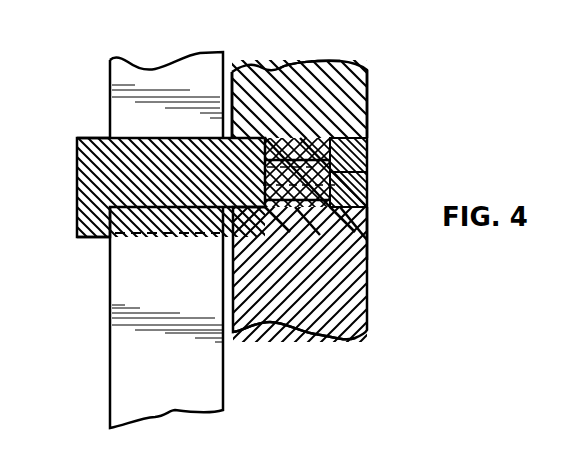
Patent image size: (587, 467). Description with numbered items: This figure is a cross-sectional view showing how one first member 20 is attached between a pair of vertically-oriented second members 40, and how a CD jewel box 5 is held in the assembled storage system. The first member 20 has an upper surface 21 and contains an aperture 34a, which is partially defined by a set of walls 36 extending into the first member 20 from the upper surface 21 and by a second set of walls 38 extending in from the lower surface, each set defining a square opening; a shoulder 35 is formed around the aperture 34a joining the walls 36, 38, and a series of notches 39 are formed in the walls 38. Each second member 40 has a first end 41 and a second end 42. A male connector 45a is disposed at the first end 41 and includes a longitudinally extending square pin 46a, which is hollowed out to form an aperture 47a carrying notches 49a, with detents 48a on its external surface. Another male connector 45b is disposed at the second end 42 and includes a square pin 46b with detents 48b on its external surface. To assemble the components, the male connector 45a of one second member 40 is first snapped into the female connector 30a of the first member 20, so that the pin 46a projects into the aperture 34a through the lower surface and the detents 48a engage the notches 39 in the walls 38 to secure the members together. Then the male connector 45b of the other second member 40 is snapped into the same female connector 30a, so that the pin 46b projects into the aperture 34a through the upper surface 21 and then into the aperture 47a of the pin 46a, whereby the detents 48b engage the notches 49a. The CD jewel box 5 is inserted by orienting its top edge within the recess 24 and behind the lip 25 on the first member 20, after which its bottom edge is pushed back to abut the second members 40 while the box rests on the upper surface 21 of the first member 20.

The CD jewel box 5 is at (135, 77).
The first member 20 is at (77, 181).
The upper surface 21 is at (88, 140).
The recess 24 is at (148, 210).
The lip 25 is at (92, 238).
The female connector 30a is at (281, 134).
The aperture 34a is at (370, 128).
The shoulder 35 is at (262, 162).
The walls 36 is at (300, 150).
The walls 38 is at (372, 195).
The notches 39 is at (370, 173).
The second member 40 is at (369, 75).
The first end 41 is at (320, 326).
The second end 42 is at (327, 75).
The male connector 45a is at (372, 224).
The male connector 45b is at (370, 112).
The pin 46a is at (275, 215).
The pin 46b is at (370, 250).
The aperture 47a is at (298, 240).
The detents 48a is at (262, 183).
The detents 48b is at (340, 218).
The notches 49a is at (335, 137).